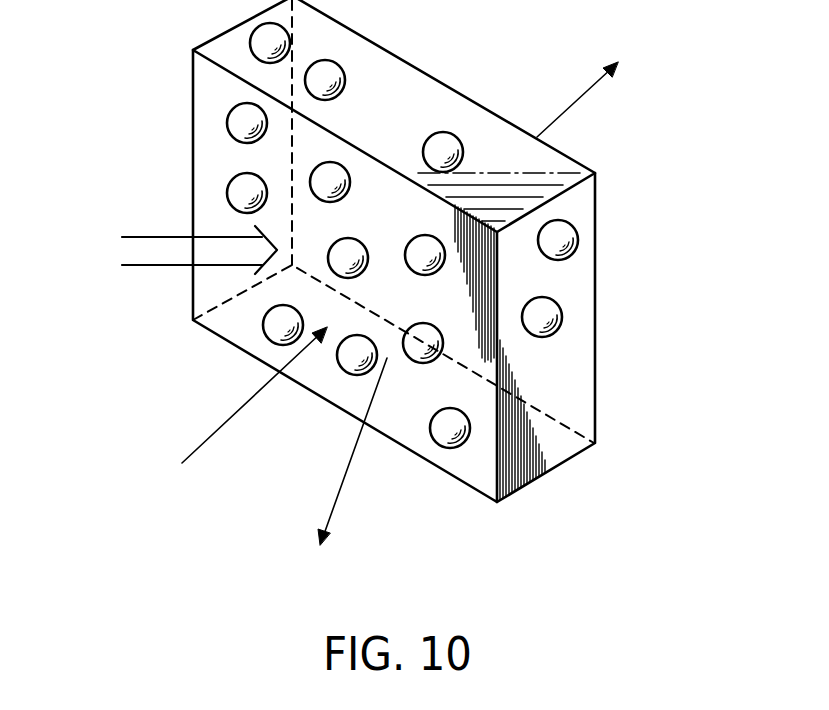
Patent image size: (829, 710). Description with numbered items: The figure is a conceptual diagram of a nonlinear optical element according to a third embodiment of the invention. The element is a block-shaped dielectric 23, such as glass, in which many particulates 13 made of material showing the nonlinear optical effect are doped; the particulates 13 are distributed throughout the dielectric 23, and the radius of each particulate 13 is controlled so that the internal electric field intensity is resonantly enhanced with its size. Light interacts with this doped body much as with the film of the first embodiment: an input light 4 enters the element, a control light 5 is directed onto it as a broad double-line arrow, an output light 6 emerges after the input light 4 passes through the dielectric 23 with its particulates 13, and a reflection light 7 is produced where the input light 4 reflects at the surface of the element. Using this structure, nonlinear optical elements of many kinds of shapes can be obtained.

The dielectric 23 is at (408, 72).
The particulate 13 is at (462, 143).
The output light 6 is at (593, 87).
The control light 5 is at (145, 266).
The input light 4 is at (227, 421).
The reflection light 7 is at (340, 490).